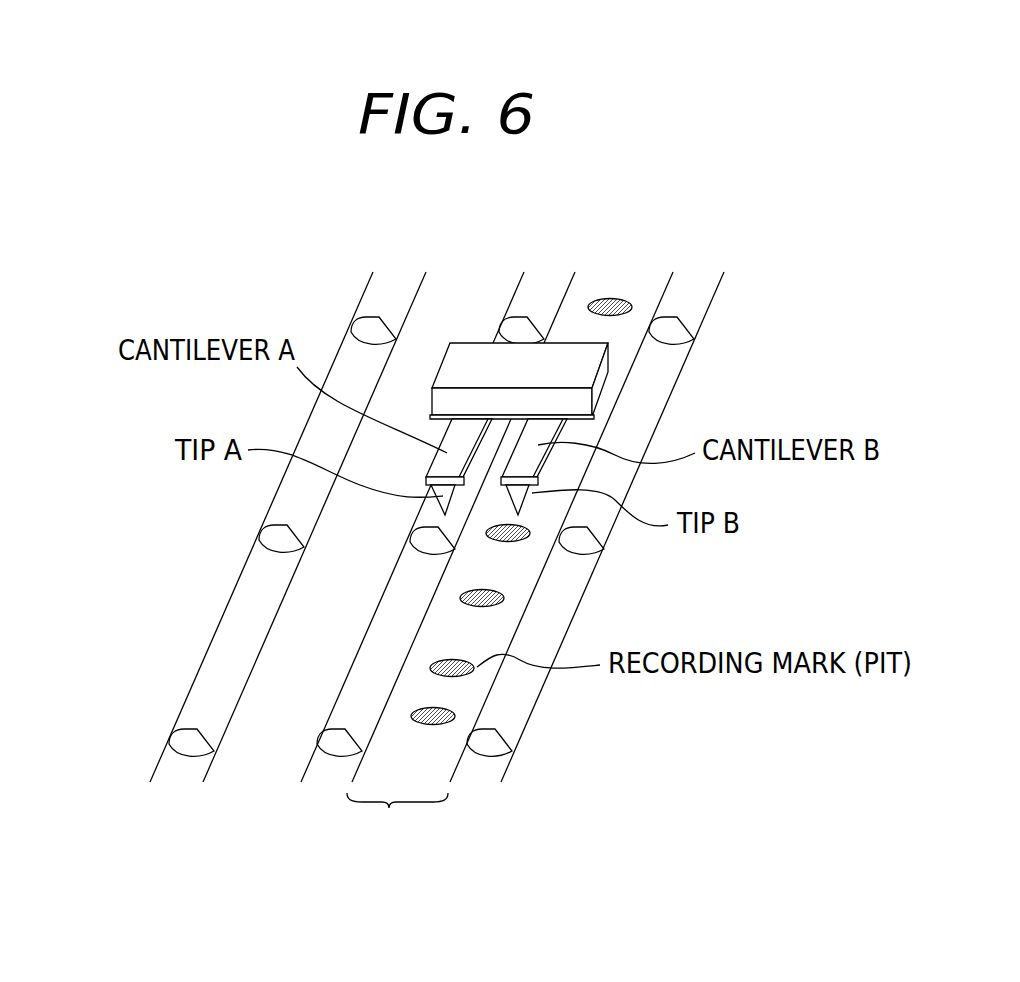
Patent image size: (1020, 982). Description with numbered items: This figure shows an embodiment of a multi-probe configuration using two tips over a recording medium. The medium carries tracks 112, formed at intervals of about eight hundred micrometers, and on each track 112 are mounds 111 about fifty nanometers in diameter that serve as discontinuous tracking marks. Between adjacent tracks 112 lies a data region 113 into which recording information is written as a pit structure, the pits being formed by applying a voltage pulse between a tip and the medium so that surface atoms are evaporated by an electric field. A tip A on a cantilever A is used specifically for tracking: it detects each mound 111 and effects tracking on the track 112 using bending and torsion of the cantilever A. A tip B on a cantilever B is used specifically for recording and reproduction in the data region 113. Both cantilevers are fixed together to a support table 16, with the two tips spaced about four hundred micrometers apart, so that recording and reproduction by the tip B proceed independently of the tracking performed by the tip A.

The support table 16 is at (477, 357).
The mound 111 is at (281, 532).
The track 112 is at (330, 775).
The data region 113 is at (389, 810).